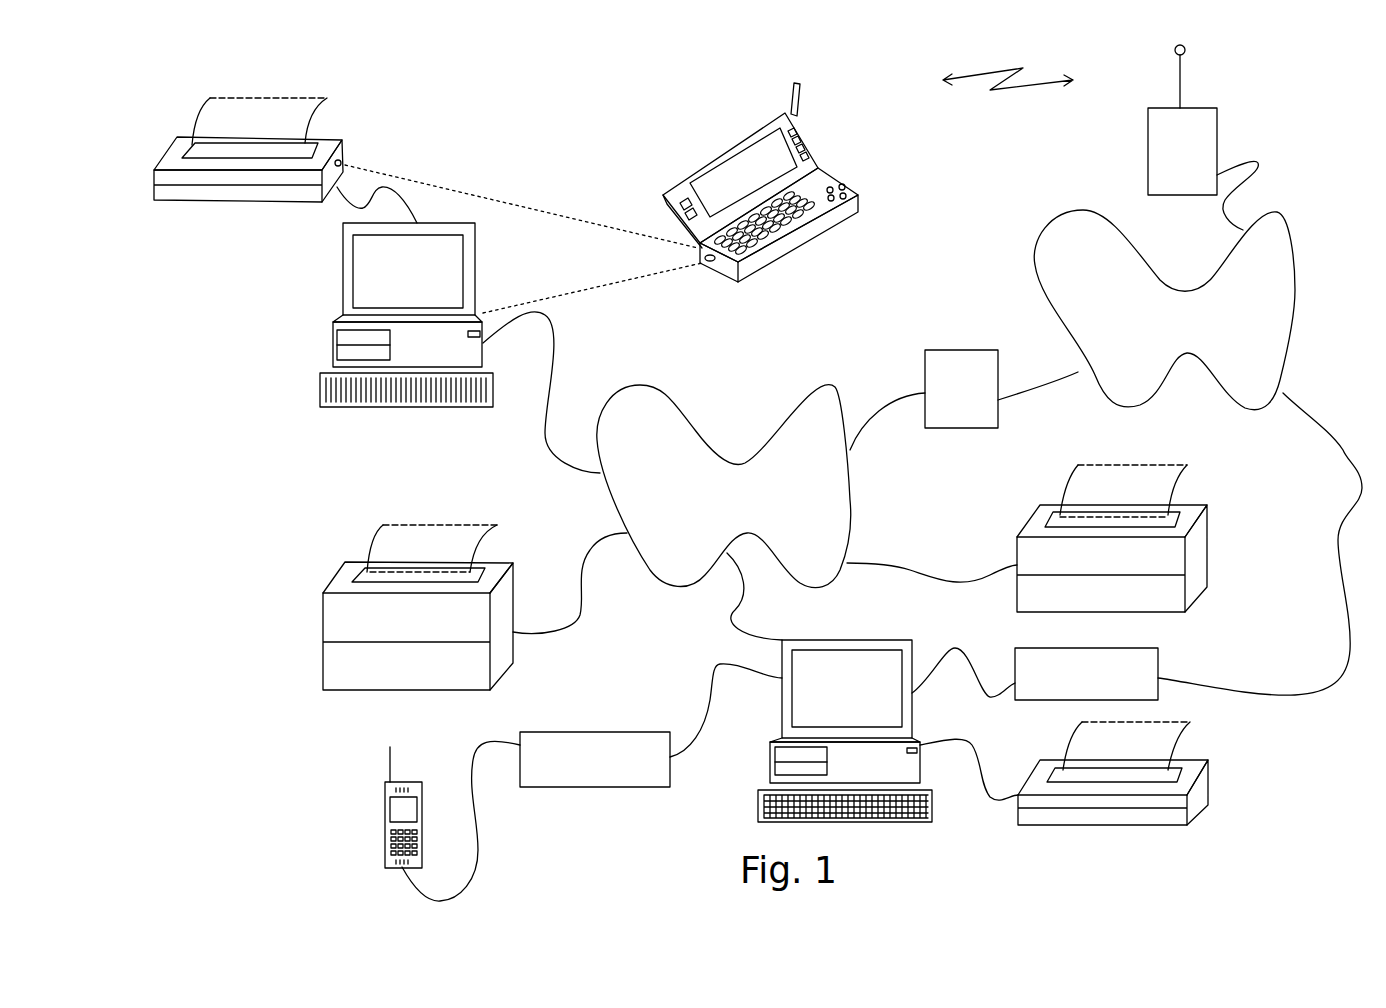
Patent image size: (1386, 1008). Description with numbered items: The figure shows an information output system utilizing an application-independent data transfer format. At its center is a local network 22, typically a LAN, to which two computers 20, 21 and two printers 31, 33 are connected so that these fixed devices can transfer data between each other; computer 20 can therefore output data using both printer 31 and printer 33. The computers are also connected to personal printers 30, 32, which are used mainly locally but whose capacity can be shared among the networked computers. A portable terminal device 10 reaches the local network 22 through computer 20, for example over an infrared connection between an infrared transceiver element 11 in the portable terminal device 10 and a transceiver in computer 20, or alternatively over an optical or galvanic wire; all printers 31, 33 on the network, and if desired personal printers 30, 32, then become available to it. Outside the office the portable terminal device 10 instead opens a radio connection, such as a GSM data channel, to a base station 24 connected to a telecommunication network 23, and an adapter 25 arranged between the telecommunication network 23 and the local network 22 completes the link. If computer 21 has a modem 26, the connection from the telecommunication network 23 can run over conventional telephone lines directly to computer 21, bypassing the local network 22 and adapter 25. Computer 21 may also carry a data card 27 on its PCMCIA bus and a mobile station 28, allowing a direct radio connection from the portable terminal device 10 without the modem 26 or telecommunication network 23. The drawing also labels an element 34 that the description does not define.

The portable terminal device 10 is at (807, 242).
The infrared transceiver element 11 is at (710, 262).
The computer 20 is at (333, 345).
The computer 21 is at (770, 752).
The local network 22 is at (845, 545).
The telecommunication network 23 is at (1290, 352).
The base station 24 is at (1217, 142).
The adapter 25 is at (950, 428).
The modem 26 is at (1158, 670).
The data card 27 is at (600, 732).
The mobile station 28 is at (385, 825).
The personal printer 30 is at (292, 202).
The printer 31 is at (323, 618).
The personal printer 32 is at (1208, 778).
The printer 33 is at (1207, 565).
The infrared port of printer 34 is at (345, 165).